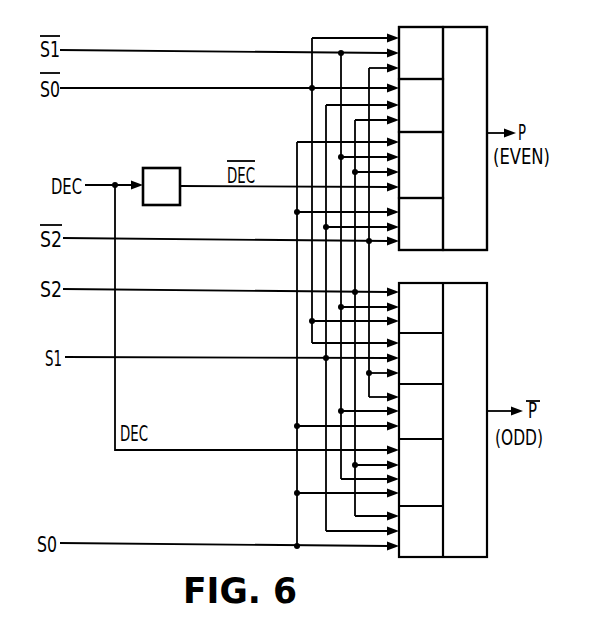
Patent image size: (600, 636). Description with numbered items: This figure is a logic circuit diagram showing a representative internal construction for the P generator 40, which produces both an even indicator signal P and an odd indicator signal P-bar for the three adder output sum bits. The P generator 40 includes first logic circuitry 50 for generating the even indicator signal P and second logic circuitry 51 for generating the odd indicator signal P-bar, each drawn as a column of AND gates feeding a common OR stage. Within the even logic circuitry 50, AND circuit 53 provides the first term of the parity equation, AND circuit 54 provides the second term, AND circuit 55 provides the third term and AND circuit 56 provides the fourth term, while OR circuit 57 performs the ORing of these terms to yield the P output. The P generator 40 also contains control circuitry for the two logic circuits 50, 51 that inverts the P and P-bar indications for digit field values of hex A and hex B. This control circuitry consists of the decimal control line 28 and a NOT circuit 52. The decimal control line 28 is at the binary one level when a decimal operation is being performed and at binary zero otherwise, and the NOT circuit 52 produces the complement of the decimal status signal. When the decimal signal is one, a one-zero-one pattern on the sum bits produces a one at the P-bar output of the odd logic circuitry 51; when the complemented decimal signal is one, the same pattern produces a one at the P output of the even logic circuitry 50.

The DEC control line 28 is at (99, 185).
The P generator 40 is at (265, 39).
The first logic circuitry 50 is at (503, 54).
The second logic circuitry 51 is at (500, 278).
The NOT circuit 52 is at (172, 168).
The AND circuit 53 is at (438, 61).
The AND circuit 54 is at (438, 102).
The AND circuit 55 is at (438, 190).
The AND circuit 56 is at (440, 227).
The OR circuit 57 is at (480, 178).